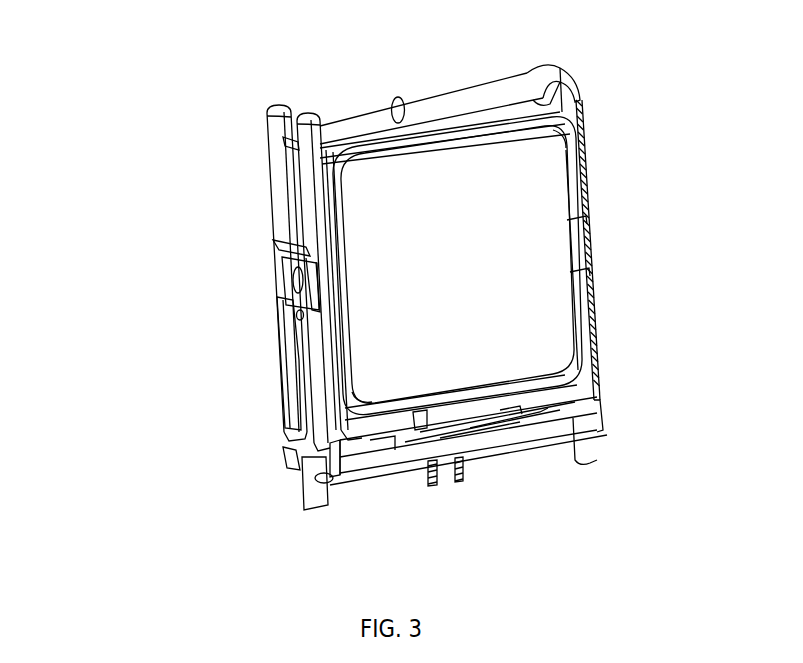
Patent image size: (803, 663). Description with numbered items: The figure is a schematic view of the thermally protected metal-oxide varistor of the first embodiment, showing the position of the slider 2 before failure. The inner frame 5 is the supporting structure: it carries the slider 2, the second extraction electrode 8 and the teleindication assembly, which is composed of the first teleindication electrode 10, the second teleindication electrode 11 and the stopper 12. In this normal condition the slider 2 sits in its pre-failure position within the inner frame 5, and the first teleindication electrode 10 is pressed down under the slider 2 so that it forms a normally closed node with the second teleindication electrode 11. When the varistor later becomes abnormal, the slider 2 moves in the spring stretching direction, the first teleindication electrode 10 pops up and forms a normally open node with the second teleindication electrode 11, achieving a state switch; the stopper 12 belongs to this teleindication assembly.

The slider 2 is at (314, 72).
The inner frame 5 is at (194, 277).
The second extraction electrode 8 is at (185, 335).
The first teleindication electrode 10 is at (388, 510).
The second teleindication electrode 11 is at (555, 494).
The stopper 12 is at (523, 422).